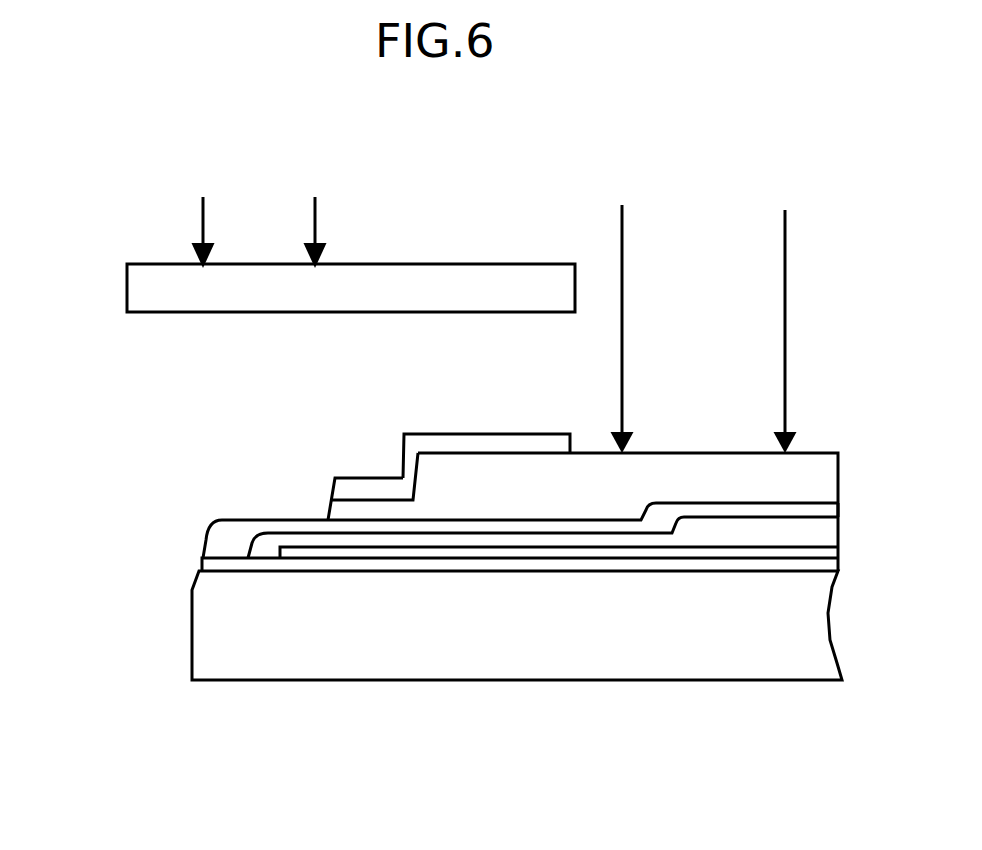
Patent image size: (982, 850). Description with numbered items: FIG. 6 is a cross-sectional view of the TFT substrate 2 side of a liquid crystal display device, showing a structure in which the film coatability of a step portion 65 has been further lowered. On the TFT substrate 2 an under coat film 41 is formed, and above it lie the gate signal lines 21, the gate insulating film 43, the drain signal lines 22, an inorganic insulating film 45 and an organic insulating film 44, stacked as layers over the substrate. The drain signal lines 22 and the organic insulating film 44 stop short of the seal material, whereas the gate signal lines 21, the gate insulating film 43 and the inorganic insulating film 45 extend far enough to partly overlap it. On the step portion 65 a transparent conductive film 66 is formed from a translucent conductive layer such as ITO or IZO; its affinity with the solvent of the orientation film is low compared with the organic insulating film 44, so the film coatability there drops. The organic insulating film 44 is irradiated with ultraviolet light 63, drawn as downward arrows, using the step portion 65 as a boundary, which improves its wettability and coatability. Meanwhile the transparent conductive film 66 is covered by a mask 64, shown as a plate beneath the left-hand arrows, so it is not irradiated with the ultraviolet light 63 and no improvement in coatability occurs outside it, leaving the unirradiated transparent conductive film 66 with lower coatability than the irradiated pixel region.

The TFT substrate 2 is at (232, 627).
The gate signal lines 21 is at (550, 553).
The drain signal lines 22 is at (683, 527).
The under coat film 41 is at (473, 568).
The gate insulating film 43 is at (608, 540).
The organic insulating film 44 is at (810, 478).
The inorganic insulating film 45 is at (738, 510).
The ultraviolet light 63 is at (620, 223).
The mask 64 is at (227, 287).
The step portion 65 is at (408, 483).
The transparent conductive film 66 is at (523, 445).